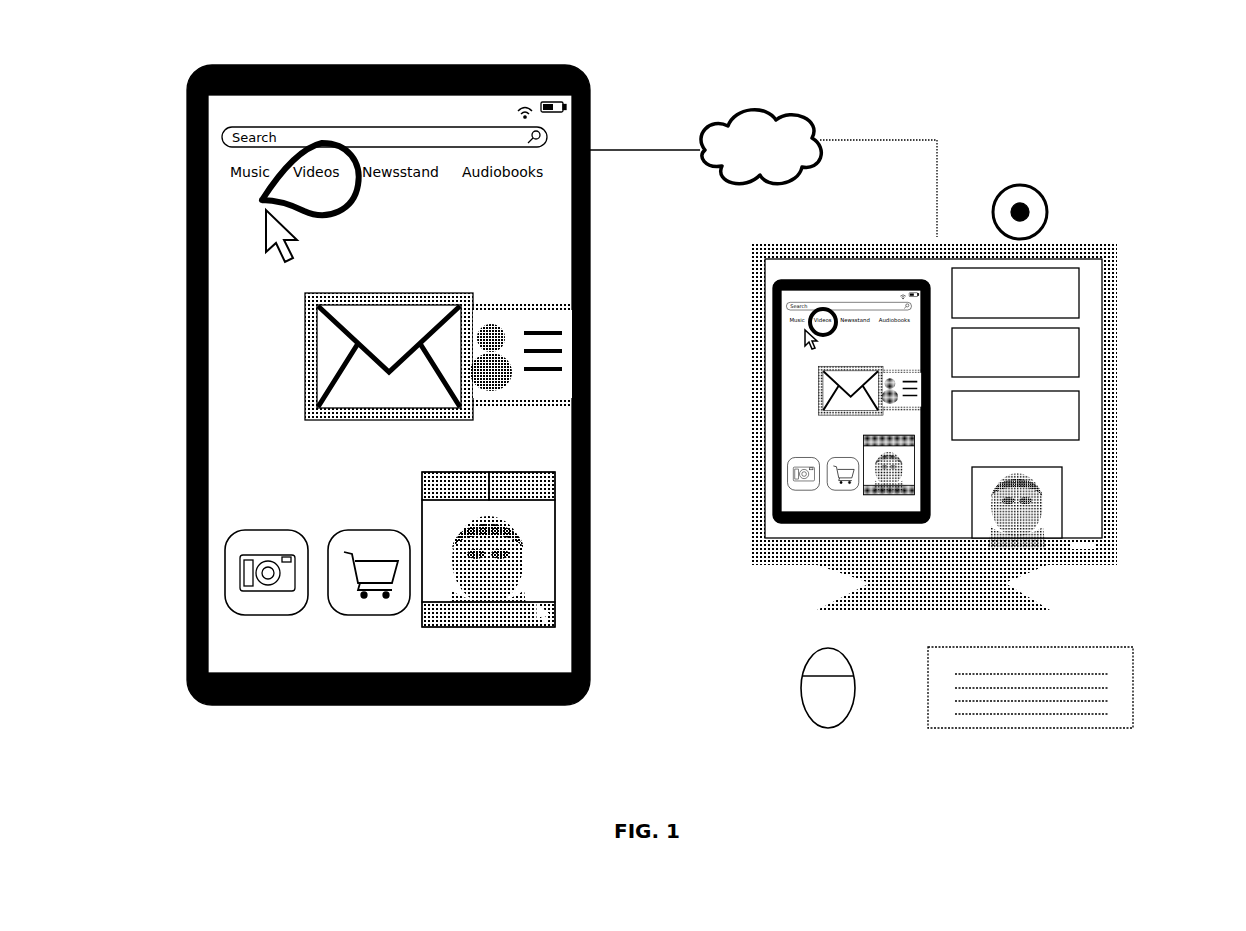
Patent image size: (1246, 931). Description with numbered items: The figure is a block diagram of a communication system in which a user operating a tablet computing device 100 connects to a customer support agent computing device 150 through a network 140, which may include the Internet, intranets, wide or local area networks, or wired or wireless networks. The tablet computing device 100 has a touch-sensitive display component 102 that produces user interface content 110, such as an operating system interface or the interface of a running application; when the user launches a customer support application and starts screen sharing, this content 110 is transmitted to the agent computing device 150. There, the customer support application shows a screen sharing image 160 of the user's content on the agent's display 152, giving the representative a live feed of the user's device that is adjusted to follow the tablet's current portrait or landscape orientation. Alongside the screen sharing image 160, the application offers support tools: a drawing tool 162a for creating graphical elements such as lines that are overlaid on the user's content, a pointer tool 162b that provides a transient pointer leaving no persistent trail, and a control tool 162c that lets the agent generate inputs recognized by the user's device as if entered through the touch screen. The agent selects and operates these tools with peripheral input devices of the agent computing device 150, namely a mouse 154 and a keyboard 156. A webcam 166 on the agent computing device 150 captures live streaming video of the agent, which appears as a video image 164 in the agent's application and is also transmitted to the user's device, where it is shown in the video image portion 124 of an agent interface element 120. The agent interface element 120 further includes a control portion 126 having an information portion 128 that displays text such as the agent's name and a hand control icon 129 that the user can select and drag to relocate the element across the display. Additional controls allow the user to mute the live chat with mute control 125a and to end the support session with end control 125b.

The tablet computing device 100 is at (590, 640).
The touch-sensitive display component 102 is at (555, 252).
The user interface content 110 is at (485, 241).
The agent interface element 120 is at (368, 462).
The video image portion 124 is at (422, 525).
The mute control 125a is at (478, 472).
The end control 125b is at (540, 472).
The control portion 126 is at (422, 613).
The information portion 128 is at (437, 636).
The control icon 129 is at (537, 628).
The network 140 is at (775, 155).
The customer support agent computing device 150 is at (1163, 220).
The display 152 is at (765, 530).
The mouse 154 is at (801, 692).
The keyboard 156 is at (952, 728).
The screen sharing image 160 is at (813, 401).
The drawing tool 162a is at (1079, 293).
The pointer tool 162b is at (1079, 355).
The control tool 162c is at (1079, 416).
The video image 164 is at (1062, 493).
The webcam 166 is at (1044, 222).